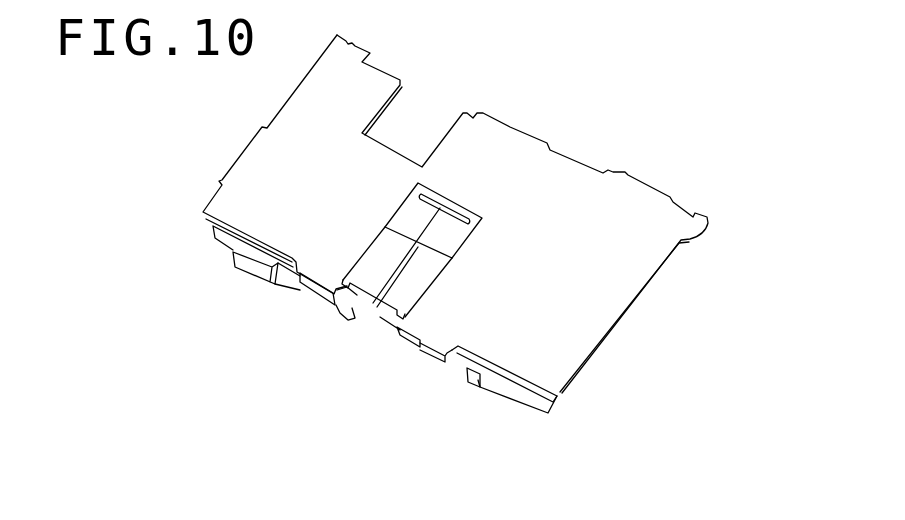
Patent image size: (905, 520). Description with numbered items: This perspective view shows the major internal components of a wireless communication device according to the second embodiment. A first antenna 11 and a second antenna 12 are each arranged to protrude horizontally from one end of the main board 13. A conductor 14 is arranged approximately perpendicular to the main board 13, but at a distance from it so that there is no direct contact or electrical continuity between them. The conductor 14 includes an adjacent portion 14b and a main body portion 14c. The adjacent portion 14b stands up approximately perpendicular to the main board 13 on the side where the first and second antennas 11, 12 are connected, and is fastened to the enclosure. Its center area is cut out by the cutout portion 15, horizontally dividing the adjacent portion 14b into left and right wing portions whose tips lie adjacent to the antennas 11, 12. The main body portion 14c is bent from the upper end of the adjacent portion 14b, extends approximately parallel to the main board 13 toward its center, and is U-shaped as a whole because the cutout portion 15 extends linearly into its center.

The first antenna 11 is at (525, 407).
The second antenna 12 is at (207, 236).
The main board 13 is at (662, 217).
The conductor 14 is at (391, 309).
The adjacent portion 14b is at (393, 343).
The main body portion 14c is at (403, 218).
The cutout portion 15 is at (445, 205).